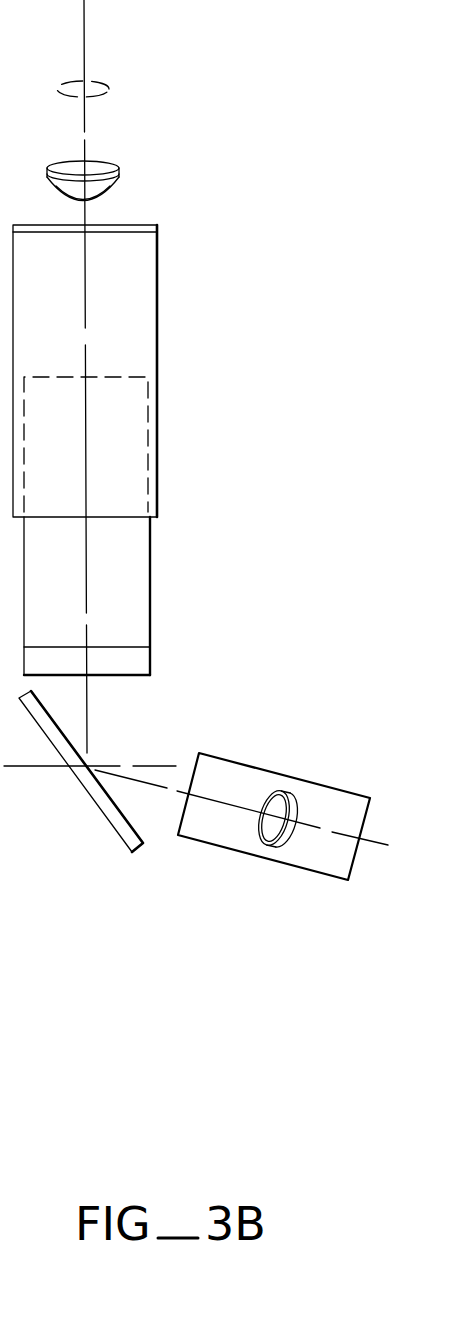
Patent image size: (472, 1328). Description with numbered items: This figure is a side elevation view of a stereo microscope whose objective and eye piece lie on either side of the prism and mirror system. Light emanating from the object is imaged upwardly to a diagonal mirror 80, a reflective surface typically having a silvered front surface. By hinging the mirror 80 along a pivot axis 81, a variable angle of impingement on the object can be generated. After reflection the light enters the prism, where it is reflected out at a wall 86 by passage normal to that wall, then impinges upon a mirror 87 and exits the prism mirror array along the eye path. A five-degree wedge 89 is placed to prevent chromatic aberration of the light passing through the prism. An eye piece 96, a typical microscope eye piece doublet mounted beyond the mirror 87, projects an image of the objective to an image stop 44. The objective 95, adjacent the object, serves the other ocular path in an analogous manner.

The image stop 44 is at (107, 82).
The eye piece 96 is at (117, 165).
The mirror 87 is at (157, 326).
The wall 86 is at (152, 575).
The wedge 89 is at (152, 660).
The diagonal mirror 80 is at (118, 835).
The pivot axis 81 is at (90, 767).
The objective 95 is at (288, 792).